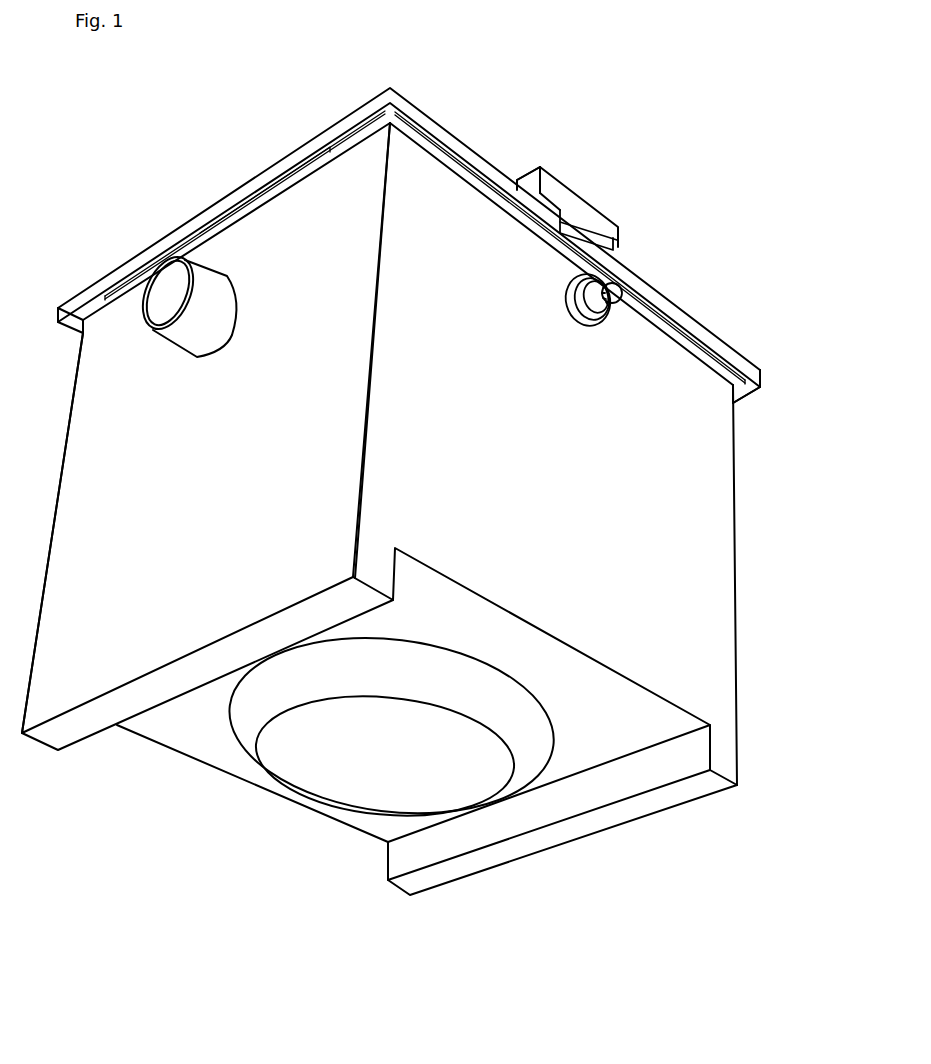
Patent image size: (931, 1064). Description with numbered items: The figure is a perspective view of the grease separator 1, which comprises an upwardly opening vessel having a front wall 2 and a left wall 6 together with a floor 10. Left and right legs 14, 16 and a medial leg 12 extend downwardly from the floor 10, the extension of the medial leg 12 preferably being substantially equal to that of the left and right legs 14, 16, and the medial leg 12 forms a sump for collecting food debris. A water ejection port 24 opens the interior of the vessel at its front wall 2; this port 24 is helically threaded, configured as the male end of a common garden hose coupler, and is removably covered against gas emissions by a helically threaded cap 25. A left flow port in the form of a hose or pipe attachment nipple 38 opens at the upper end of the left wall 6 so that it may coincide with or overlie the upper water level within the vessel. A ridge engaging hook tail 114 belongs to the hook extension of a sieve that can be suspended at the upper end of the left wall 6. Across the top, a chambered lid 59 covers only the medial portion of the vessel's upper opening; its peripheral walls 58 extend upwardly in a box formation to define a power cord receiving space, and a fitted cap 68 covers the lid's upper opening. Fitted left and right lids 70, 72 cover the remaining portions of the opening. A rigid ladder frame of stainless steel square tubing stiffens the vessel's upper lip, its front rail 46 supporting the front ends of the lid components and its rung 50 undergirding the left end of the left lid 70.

The grease separator 1 is at (167, 215).
The front wall 2 is at (567, 590).
The left wall 6 is at (163, 520).
The floor 10 is at (183, 728).
The medial leg 12 is at (325, 770).
The left leg 14 is at (70, 727).
The right leg 16 is at (485, 855).
The water ejection port 24 is at (583, 330).
The helically threaded cap 25 is at (612, 325).
The left hose or pipe attachment nipple 38 is at (140, 320).
The front rail 46 is at (683, 345).
The rung 50 is at (358, 133).
The peripheral walls 58 is at (603, 242).
The chambered lid 59 is at (588, 185).
The fitted cap 68 is at (548, 172).
The left lid 70 is at (457, 142).
The right lid 72 is at (742, 362).
The ridge engaging hook tail 114 is at (240, 203).